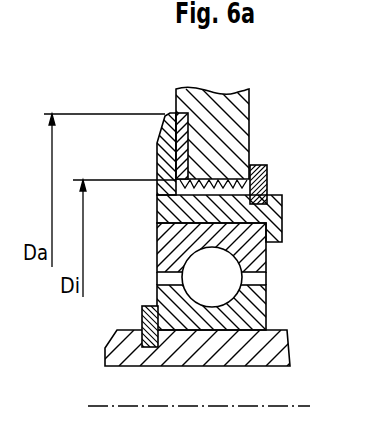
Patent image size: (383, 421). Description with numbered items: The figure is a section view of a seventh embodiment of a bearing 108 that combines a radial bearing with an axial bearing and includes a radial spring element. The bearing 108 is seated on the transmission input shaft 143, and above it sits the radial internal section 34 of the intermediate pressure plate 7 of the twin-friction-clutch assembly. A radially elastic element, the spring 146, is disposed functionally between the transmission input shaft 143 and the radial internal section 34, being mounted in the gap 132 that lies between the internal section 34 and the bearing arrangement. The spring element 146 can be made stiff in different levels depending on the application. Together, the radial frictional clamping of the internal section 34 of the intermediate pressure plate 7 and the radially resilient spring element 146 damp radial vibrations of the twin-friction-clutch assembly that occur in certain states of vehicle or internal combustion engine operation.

The intermediate pressure plate 7 is at (200, 119).
The radial internal section 34 is at (248, 123).
The radial spring element 146 is at (267, 187).
The gap 132 is at (158, 193).
The bearing 108 is at (266, 302).
The transmission input shaft 143 is at (273, 338).